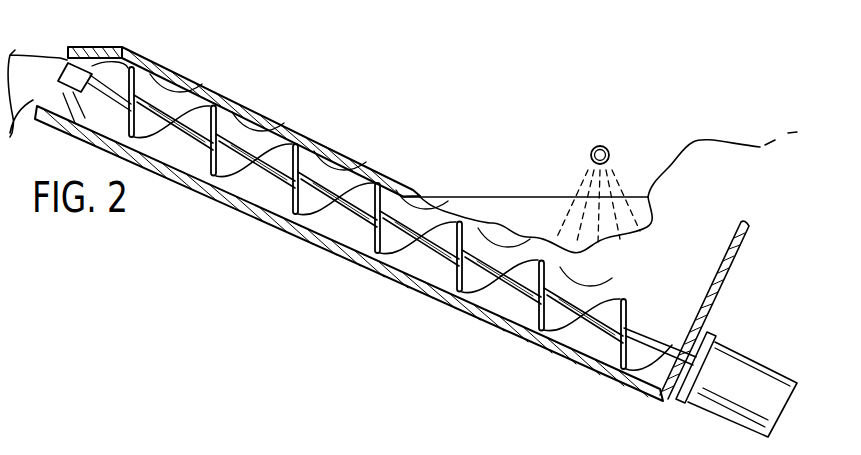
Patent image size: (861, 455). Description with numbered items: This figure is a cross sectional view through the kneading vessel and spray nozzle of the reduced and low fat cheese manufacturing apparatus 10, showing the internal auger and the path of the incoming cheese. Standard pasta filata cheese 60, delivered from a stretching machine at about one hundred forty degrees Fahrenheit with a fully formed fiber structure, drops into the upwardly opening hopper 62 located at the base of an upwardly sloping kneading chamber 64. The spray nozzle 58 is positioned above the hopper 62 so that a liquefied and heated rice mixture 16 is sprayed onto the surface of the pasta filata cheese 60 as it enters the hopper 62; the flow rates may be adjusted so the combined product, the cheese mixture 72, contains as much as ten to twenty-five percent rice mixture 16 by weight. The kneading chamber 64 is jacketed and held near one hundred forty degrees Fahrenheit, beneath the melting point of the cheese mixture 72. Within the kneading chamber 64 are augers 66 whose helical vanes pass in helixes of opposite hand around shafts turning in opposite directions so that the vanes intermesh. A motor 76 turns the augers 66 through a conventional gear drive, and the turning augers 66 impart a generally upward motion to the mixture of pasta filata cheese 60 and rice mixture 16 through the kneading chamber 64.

The reduced and low fat cheese manufacturing apparatus 10 is at (196, 454).
The rice mixture 16 is at (583, 190).
The spray nozzle 58 is at (601, 146).
The pasta filata cheese 60 is at (714, 152).
The hopper 62 is at (740, 240).
The kneading chamber 64 is at (388, 275).
The augers 66 is at (544, 343).
The cheese mixture 72 is at (34, 70).
The motor 76 is at (730, 423).